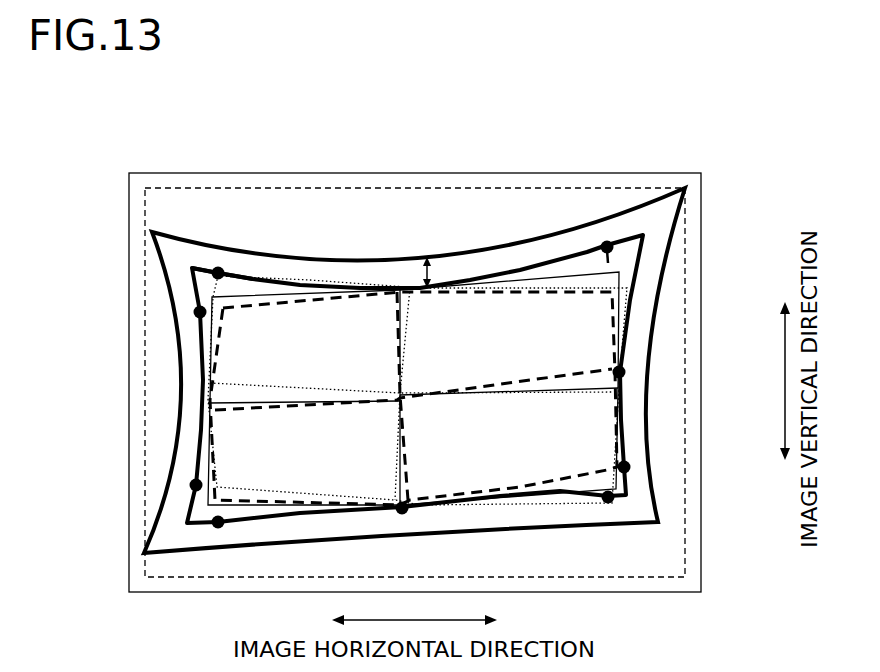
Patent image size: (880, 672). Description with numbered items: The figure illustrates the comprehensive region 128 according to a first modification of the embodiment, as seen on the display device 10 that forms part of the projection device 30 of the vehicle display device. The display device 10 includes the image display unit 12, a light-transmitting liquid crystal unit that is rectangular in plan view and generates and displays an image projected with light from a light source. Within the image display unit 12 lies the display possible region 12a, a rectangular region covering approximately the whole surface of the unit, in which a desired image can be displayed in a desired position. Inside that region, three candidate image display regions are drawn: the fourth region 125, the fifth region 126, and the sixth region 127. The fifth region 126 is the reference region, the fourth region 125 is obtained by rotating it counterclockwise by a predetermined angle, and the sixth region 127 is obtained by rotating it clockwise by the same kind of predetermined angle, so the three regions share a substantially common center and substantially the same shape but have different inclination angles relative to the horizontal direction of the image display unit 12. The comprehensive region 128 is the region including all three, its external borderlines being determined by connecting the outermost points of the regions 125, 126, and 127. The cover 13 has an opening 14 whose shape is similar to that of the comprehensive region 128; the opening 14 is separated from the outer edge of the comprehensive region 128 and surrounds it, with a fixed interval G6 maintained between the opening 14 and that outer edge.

The display device 10 is at (459, 138).
The projection device 30 is at (497, 108).
The image display unit 12 is at (356, 268).
The display possible region 12a is at (523, 188).
The cover 13 is at (626, 212).
The opening 14 is at (560, 240).
The fourth region 125 is at (306, 288).
The fifth region 126 is at (269, 300).
The sixth region 127 is at (224, 282).
The comprehensive region 128 is at (199, 270).
The interval G6 is at (427, 257).